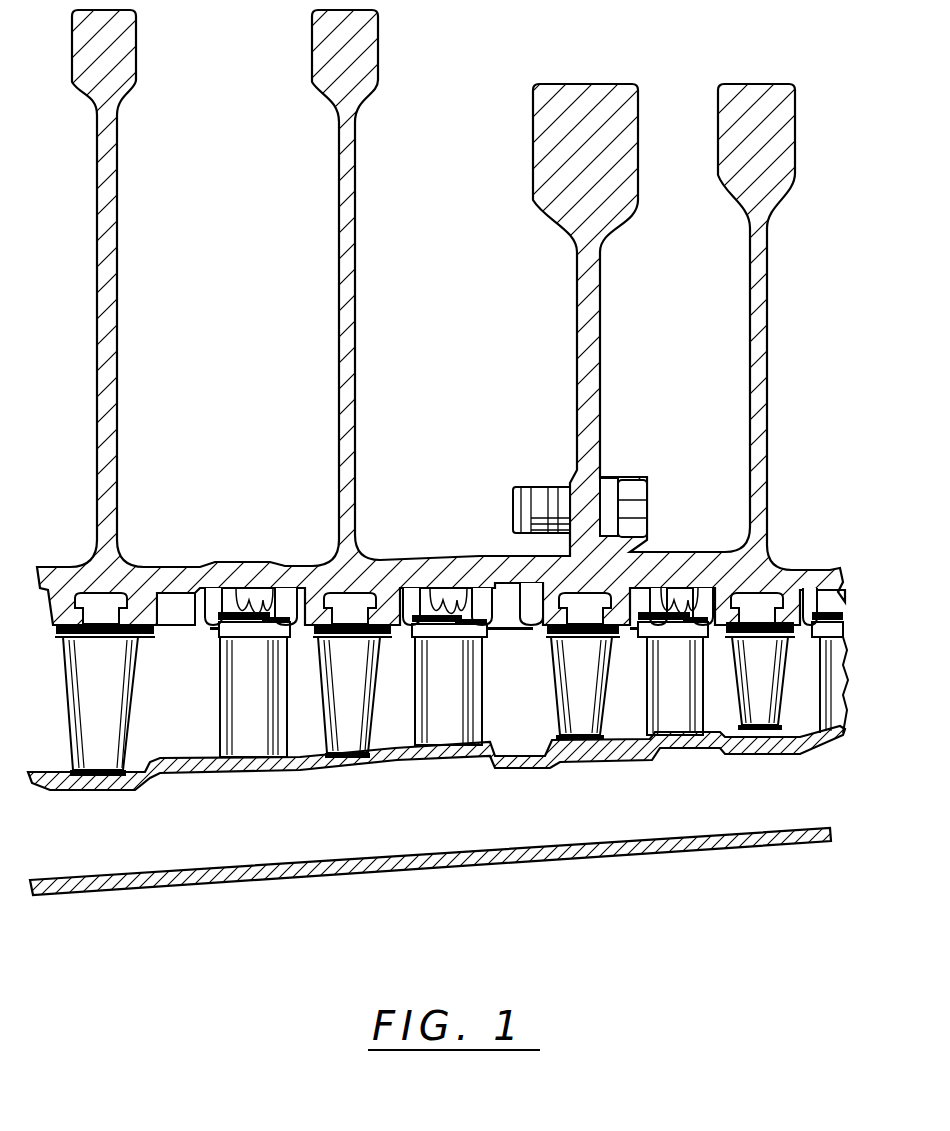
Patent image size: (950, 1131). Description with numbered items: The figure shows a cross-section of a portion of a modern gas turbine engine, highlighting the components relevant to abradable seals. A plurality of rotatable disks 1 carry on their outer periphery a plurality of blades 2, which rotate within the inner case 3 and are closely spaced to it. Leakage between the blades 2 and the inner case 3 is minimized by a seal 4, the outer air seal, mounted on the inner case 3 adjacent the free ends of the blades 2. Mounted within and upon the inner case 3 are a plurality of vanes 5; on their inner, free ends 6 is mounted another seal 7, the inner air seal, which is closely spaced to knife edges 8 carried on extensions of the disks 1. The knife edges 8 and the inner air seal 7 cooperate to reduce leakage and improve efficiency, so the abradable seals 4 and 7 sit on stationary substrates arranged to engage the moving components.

The rotatable disk 1 is at (794, 277).
The blade 2 is at (767, 706).
The inner case 3 is at (189, 778).
The seal 4 is at (790, 727).
The vane 5 is at (681, 706).
The free end 6 is at (635, 628).
The seal 7 is at (713, 617).
The knife edge 8 is at (680, 597).